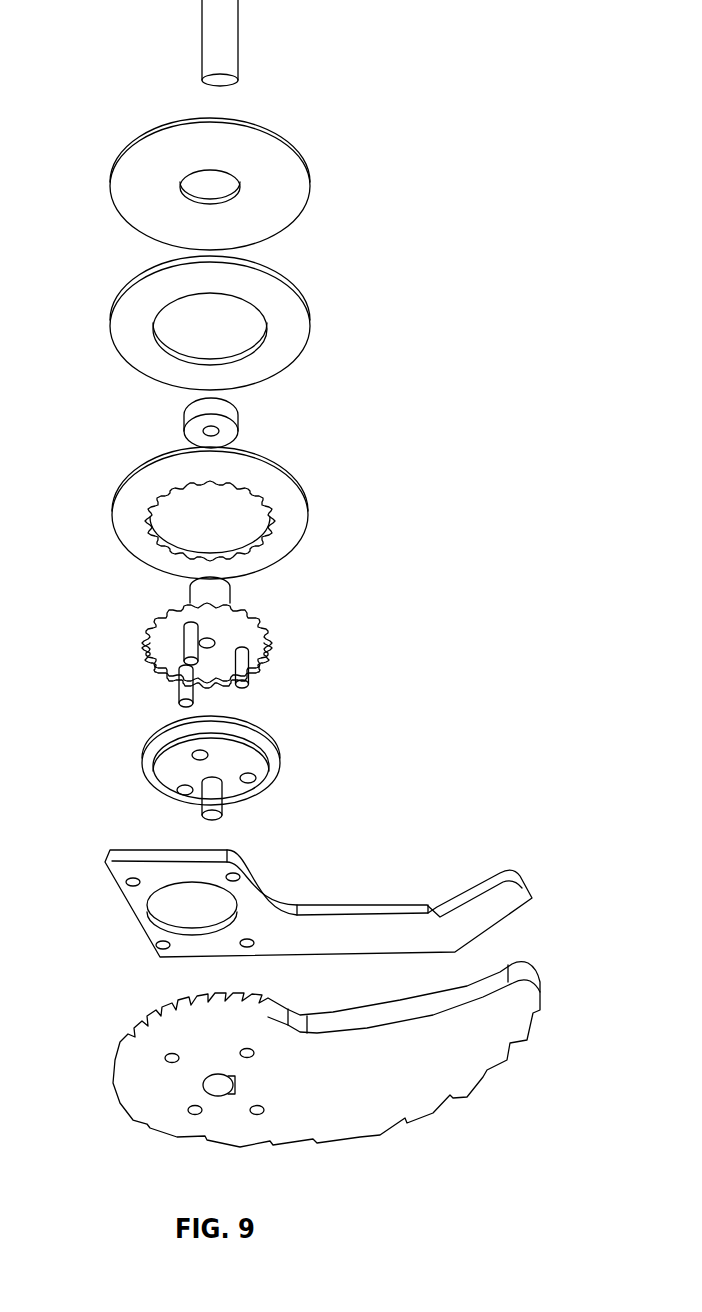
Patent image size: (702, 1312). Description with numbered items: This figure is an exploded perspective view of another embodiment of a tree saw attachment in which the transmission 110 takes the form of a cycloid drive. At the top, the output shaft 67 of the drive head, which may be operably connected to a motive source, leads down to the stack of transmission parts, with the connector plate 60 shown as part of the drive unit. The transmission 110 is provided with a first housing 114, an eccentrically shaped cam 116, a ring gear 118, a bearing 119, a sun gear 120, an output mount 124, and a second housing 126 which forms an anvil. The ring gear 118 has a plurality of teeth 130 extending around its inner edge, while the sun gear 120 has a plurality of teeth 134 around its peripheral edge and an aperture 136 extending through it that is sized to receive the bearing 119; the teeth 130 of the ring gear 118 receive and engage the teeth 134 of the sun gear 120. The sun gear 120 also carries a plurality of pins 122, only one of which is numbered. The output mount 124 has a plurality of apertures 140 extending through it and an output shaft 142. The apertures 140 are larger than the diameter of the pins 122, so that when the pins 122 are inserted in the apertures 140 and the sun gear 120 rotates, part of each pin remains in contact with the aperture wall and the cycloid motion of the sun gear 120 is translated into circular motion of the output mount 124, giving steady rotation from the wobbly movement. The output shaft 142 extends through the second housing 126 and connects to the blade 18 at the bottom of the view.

The transmission 110 is at (492, 376).
The output shaft 67 is at (228, 38).
The connector plate 60 is at (310, 183).
The first housing 114 is at (310, 330).
The eccentrically shaped cam 116 is at (233, 428).
The ring gear 118 is at (218, 513).
The teeth 130 is at (203, 482).
The bearing 119 is at (229, 595).
The sun gear 120 is at (211, 642).
The teeth 134 is at (155, 618).
The aperture 136 is at (214, 648).
The pins 122 is at (246, 686).
The output mount 124 is at (240, 781).
The apertures 140 is at (257, 779).
The output shaft 142 is at (200, 812).
The second housing 126 is at (250, 880).
The blade 18 is at (327, 1028).